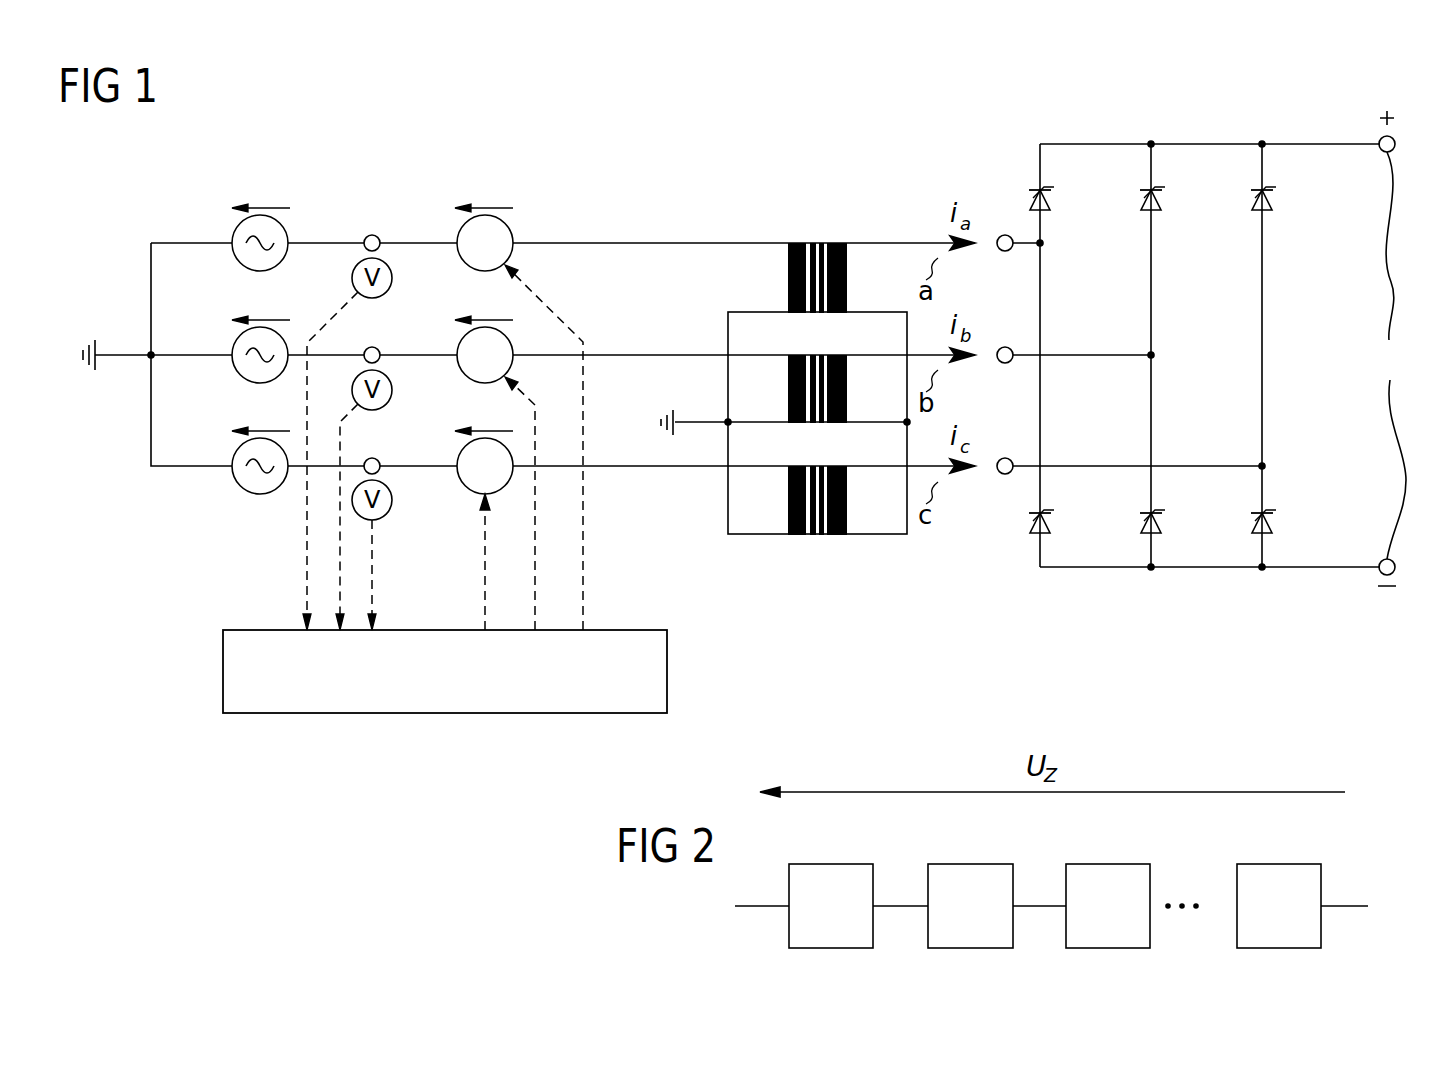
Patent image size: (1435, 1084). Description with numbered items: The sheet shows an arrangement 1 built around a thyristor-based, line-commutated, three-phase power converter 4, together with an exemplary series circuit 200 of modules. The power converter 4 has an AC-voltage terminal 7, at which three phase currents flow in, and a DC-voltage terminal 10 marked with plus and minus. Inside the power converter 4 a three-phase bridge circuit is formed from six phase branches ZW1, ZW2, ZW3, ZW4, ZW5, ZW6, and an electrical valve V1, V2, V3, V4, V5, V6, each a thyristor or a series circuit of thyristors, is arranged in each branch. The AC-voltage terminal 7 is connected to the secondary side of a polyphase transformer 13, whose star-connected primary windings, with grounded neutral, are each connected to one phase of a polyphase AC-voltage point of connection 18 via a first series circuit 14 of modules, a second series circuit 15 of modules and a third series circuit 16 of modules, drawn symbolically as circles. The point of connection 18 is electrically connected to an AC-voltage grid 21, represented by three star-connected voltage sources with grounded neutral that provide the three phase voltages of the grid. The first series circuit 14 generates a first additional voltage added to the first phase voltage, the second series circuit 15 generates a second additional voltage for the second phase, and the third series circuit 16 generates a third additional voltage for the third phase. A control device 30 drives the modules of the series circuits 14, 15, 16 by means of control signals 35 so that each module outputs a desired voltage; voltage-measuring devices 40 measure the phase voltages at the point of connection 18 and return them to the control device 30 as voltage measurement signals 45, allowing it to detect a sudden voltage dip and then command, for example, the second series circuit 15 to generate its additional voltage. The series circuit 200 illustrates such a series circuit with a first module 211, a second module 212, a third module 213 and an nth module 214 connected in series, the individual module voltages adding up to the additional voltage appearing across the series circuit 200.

In FIG. 1, the arrangement 1 is at (887, 155).
In FIG. 1, the power converter 4 is at (1212, 317).
In FIG. 1, the AC-voltage terminal 7 is at (997, 205).
In FIG. 1, the DC-voltage terminal 10 is at (1389, 355).
In FIG. 1, the transformer 13 is at (814, 198).
In FIG. 1, the first series circuit of modules 14 is at (511, 226).
In FIG. 1, the second series circuit of modules 15 is at (511, 338).
In FIG. 1, the third series circuit of modules 16 is at (511, 449).
In FIG. 1, the AC-voltage point of connection 18 is at (370, 198).
In FIG. 1, the AC-voltage grid 21 is at (220, 198).
In FIG. 1, the control device 30 is at (223, 668).
In FIG. 1, the control signals 35 is at (535, 548).
In FIG. 1, the voltage-measuring devices 40 is at (390, 516).
In FIG. 1, the voltage measurement signals 45 is at (306, 554).
In FIG. 1, the electrical valve V1 is at (1052, 205).
In FIG. 1, the electrical valve V2 is at (1272, 525).
In FIG. 1, the electrical valve V3 is at (1163, 205).
In FIG. 1, the electrical valve V4 is at (1050, 525).
In FIG. 1, the electrical valve V5 is at (1274, 205).
In FIG. 1, the electrical valve V6 is at (1161, 525).
In FIG. 1, the phase branch ZW1 is at (1040, 160).
In FIG. 1, the phase branch ZW2 is at (1262, 552).
In FIG. 1, the phase branch ZW3 is at (1151, 160).
In FIG. 1, the phase branch ZW4 is at (1040, 552).
In FIG. 1, the phase branch ZW5 is at (1262, 160).
In FIG. 1, the phase branch ZW6 is at (1151, 552).
In FIG. 2, the series circuit of modules 200 is at (1266, 768).
In FIG. 2, the first module 211 is at (825, 864).
In FIG. 2, the second module 212 is at (964, 864).
In FIG. 2, the third module 213 is at (1103, 864).
In FIG. 2, the nth module 214 is at (1273, 864).